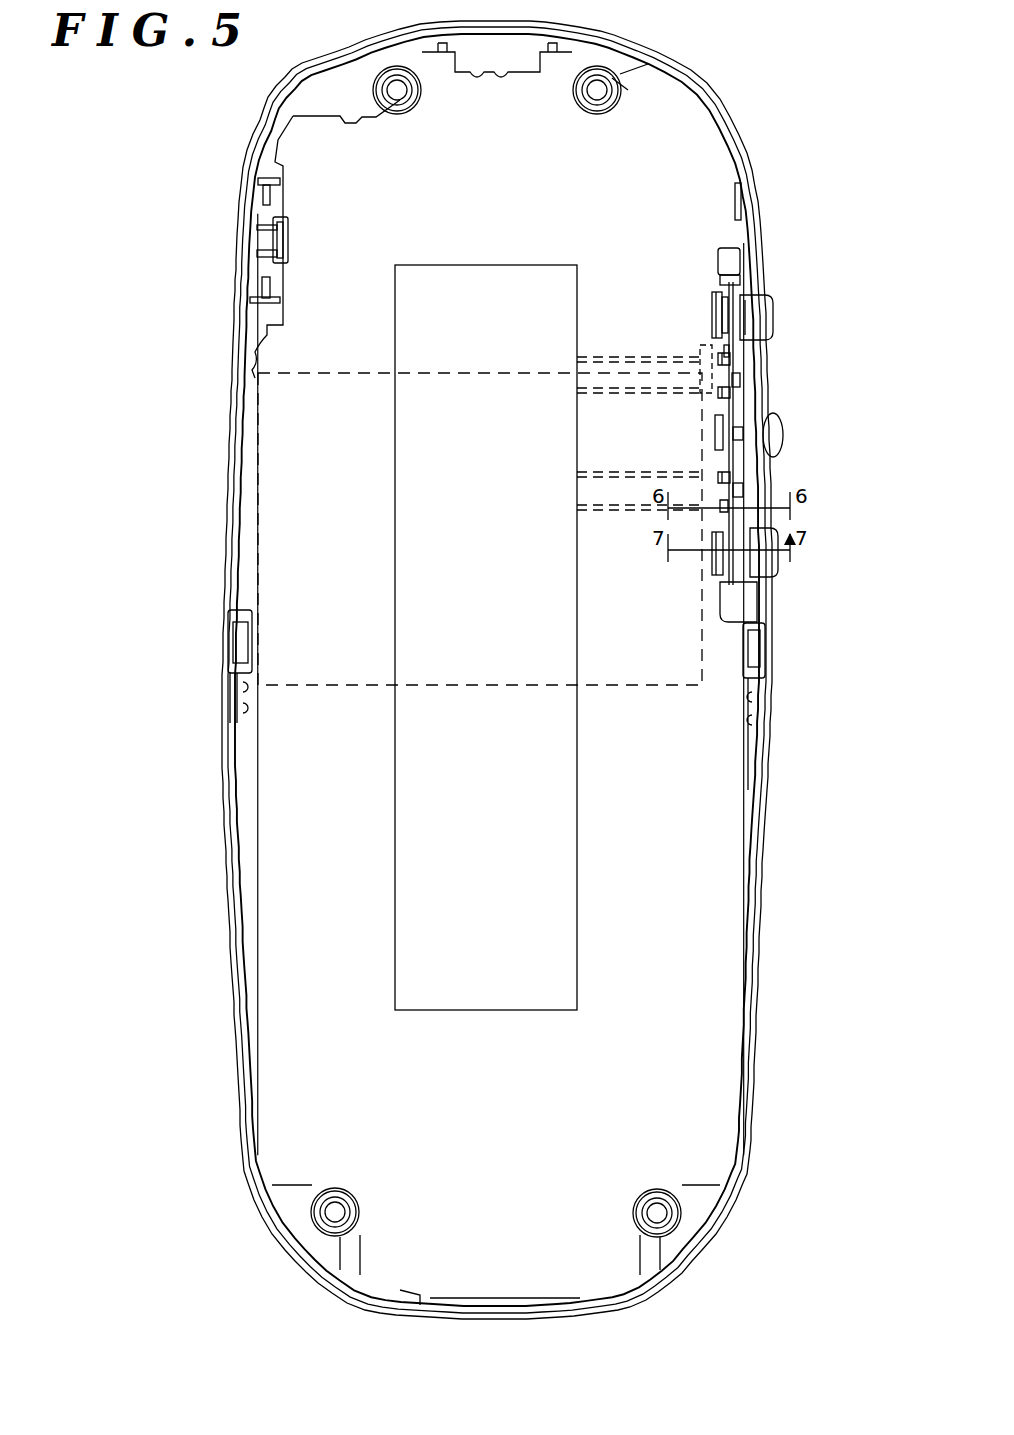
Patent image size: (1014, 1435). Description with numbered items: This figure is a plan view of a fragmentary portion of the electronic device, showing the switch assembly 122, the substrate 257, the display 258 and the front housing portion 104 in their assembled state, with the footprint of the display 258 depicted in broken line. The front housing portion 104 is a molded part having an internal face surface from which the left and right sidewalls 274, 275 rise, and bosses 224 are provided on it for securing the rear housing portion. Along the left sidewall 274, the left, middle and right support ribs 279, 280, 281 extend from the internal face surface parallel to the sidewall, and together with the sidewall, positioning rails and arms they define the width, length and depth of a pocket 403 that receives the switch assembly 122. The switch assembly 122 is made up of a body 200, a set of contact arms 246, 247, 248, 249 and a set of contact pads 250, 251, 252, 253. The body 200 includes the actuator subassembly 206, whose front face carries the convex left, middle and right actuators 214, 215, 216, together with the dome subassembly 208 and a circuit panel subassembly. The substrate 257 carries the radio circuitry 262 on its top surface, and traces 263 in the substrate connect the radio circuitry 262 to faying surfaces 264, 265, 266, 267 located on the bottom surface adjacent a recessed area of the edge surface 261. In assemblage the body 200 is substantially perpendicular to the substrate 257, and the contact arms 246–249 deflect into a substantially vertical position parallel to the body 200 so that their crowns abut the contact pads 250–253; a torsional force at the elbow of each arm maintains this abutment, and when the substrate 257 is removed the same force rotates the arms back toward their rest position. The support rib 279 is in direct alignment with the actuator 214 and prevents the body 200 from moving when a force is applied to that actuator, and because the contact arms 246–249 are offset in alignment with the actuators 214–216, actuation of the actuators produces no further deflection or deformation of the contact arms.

The front housing portion 104 is at (770, 1022).
The bosses 224 is at (385, 68).
The substrate 257 is at (677, 100).
The radio circuitry 262 is at (474, 265).
The display 258 is at (688, 686).
The traces 263 is at (580, 388).
The body 200 is at (748, 278).
The edge surface 261 is at (736, 272).
The dome subassembly 208 is at (718, 300).
The right support rib 281 is at (720, 312).
The actuator subassembly 206 is at (760, 318).
The right actuator 216 is at (775, 323).
The switch assembly 122 is at (792, 323).
The contact pad 253 is at (722, 352).
The faying surface 267 is at (700, 360).
The contact arm 249 is at (731, 358).
The contact arm 248 is at (731, 392).
The faying surface 266 is at (700, 394).
The contact pad 252 is at (718, 394).
The middle support rib 280 is at (733, 427).
The middle actuator 215 is at (782, 428).
The faying surface 265 is at (700, 475).
The contact pad 251 is at (718, 475).
The contact arm 247 is at (733, 478).
The contact arm 246 is at (730, 505).
The faying surface 264 is at (700, 512).
The contact pad 250 is at (735, 510).
The left support rib 279 is at (715, 560).
The left actuator 214 is at (770, 566).
The pocket 403 is at (746, 586).
The right sidewall 275 is at (230, 714).
The left sidewall 274 is at (762, 780).